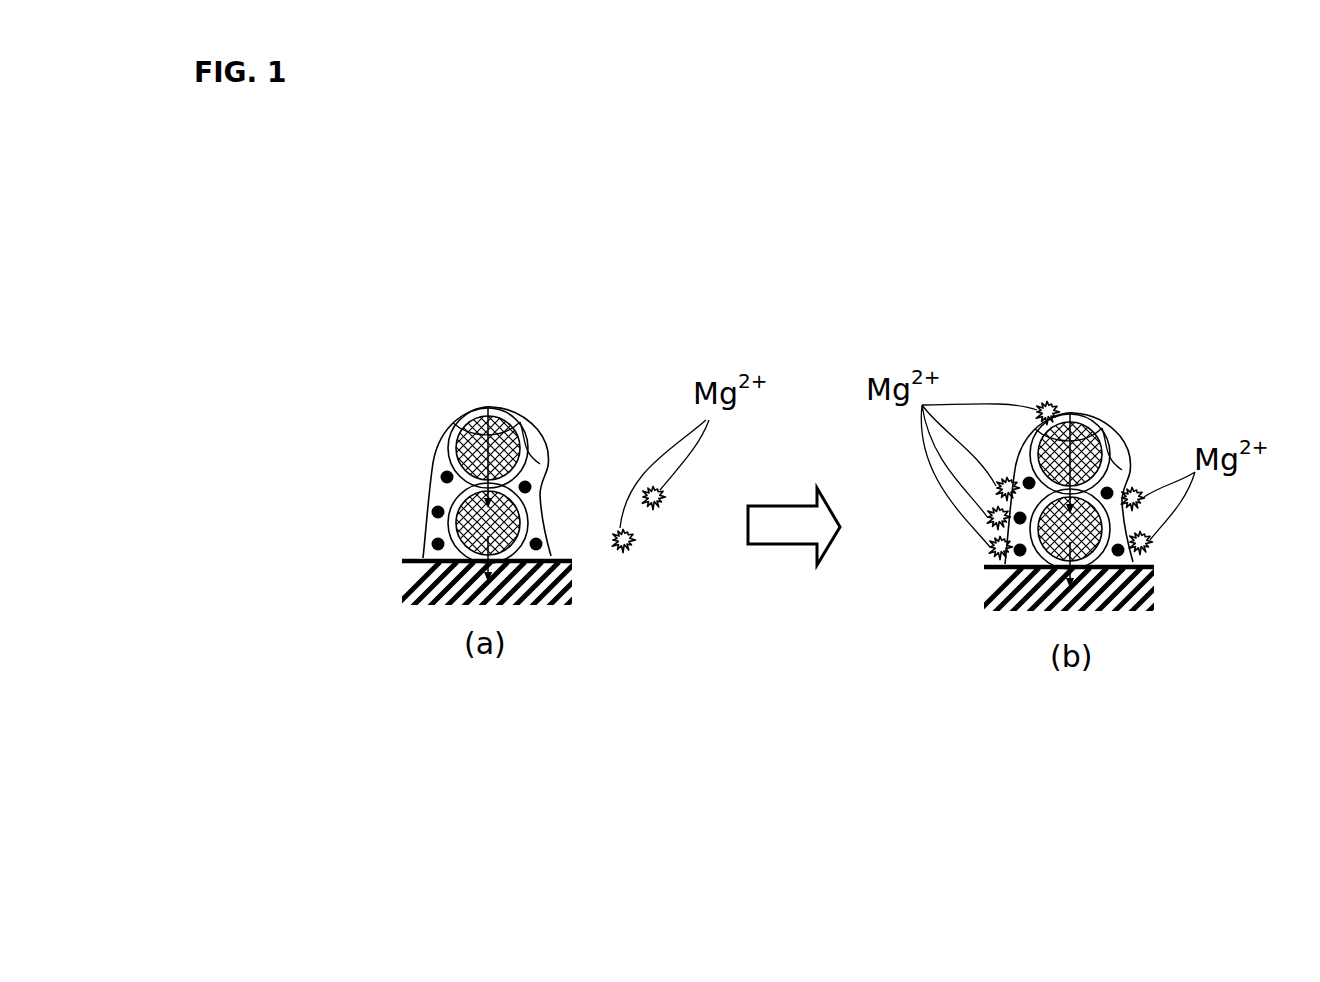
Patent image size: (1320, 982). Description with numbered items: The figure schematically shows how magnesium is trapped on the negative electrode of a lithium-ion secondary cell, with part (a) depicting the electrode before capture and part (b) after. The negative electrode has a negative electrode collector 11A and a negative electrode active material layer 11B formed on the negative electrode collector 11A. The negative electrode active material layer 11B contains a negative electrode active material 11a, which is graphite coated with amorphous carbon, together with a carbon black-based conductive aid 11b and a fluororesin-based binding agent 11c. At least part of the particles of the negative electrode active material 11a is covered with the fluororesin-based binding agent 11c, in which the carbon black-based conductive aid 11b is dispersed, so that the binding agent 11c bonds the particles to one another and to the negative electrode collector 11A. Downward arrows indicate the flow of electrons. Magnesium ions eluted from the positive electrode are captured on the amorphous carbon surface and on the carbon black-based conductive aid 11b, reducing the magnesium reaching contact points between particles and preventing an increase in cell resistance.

The negative electrode collector 11A is at (405, 576).
The negative electrode active material layer 11B is at (858, 368).
The negative electrode active material 11a is at (781, 416).
The carbon black-based conductive aid 11b is at (540, 448).
The fluororesin-based binding agent 11c is at (457, 277).